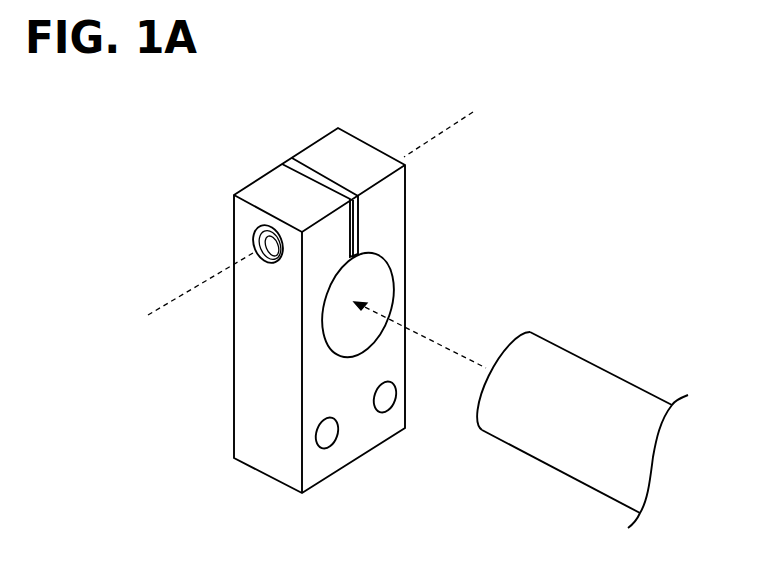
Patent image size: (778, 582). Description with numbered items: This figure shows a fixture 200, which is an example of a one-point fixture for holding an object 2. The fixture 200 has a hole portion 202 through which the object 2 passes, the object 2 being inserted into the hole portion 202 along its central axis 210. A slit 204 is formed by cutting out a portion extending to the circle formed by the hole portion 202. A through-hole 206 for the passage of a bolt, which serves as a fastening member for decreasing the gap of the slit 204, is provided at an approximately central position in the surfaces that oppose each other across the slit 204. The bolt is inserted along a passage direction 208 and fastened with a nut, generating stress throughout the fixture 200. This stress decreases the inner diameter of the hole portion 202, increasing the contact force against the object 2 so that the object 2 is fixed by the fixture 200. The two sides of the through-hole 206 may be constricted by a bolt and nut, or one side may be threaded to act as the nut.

The object 2 is at (577, 378).
The fixture 200 is at (367, 105).
The hole portion 202 is at (374, 273).
The slit 204 is at (302, 164).
The through-hole 206 is at (253, 242).
The passage direction 208 is at (449, 130).
The central axis 210 is at (442, 352).